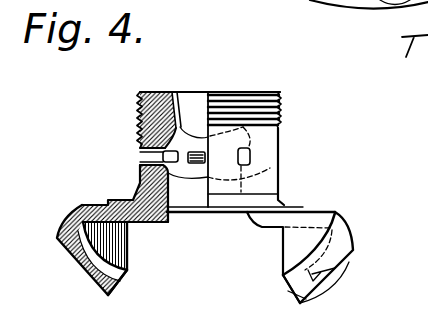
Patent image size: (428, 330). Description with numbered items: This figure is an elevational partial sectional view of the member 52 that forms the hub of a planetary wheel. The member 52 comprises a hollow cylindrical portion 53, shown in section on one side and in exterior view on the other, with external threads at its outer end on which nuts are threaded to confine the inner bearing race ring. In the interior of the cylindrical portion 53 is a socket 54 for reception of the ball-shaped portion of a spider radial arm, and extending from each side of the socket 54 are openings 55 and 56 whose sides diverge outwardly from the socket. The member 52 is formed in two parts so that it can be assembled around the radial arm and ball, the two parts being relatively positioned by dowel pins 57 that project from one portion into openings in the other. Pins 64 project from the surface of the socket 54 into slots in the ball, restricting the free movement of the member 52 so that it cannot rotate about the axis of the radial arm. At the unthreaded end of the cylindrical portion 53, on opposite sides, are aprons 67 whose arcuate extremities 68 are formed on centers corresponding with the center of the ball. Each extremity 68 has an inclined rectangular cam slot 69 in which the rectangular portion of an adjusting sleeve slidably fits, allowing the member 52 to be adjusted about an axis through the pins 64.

The member 52 is at (246, 92).
The hollow cylindrical portion 53 is at (282, 149).
The socket 54 is at (138, 126).
The opening 55 is at (174, 93).
The opening 56 is at (181, 213).
The dowel pin 57 is at (140, 182).
The pin 64 is at (143, 155).
The apron 67 is at (68, 216).
The arcuate extremity 68 is at (82, 272).
The cam slot 69 is at (338, 272).